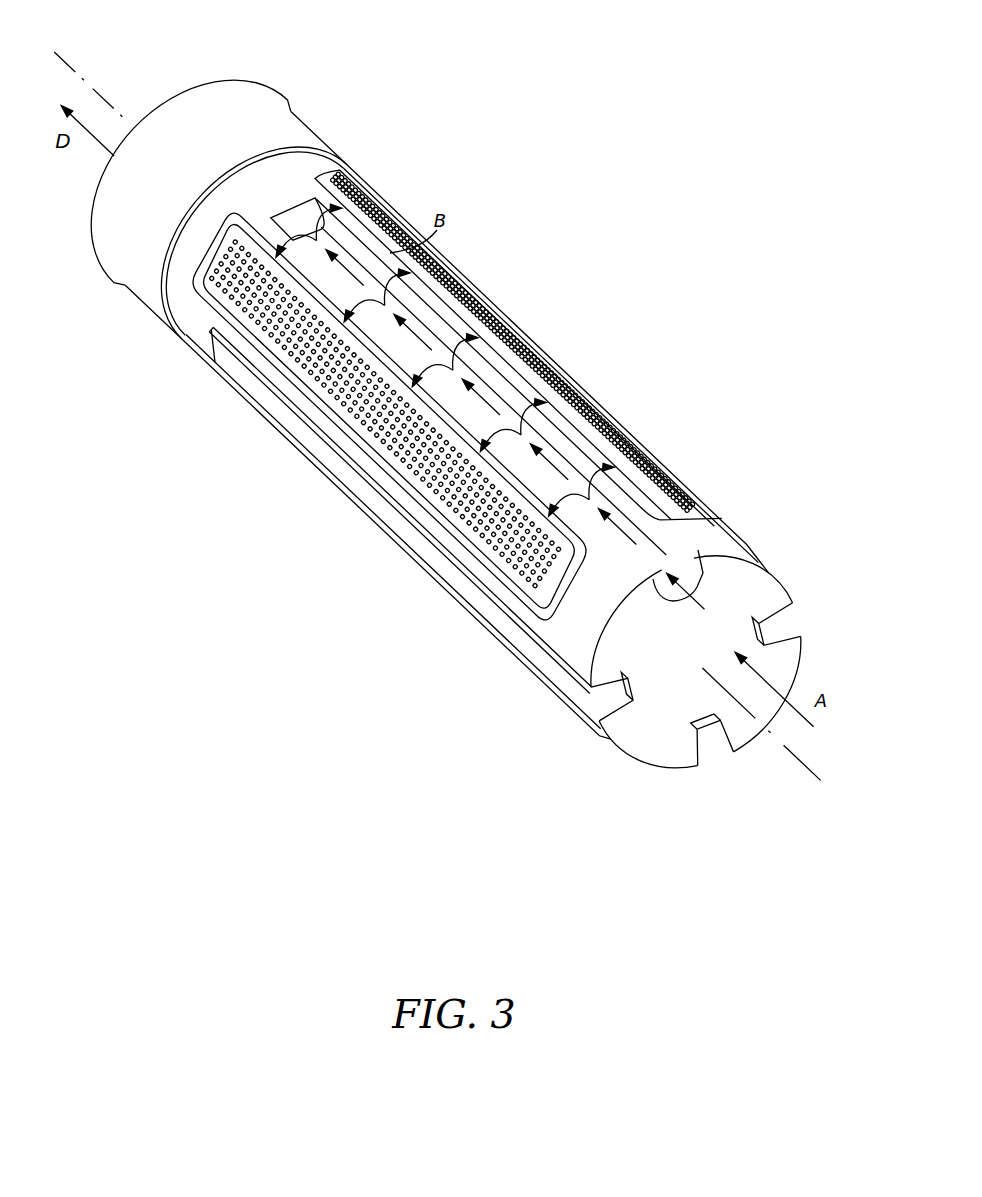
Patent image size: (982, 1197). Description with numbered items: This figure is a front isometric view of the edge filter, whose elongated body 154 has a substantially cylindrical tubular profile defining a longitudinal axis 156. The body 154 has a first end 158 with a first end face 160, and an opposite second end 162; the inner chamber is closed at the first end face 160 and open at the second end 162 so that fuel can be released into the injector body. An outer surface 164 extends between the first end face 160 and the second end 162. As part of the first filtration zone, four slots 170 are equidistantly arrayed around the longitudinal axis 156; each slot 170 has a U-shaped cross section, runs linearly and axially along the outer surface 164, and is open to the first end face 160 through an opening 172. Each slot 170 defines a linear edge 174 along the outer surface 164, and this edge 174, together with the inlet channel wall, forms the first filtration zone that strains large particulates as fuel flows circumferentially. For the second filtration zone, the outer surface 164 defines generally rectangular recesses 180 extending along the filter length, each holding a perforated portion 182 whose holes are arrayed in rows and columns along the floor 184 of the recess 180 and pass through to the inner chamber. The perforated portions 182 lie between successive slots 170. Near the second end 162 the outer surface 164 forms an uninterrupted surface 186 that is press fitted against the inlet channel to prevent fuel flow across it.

The body 154 is at (320, 137).
The longitudinal axis 156 is at (83, 83).
The first end 158 is at (758, 545).
The first end face 160 is at (775, 670).
The second end 162 is at (270, 87).
The outer surface 164 is at (200, 357).
The slot 170 is at (700, 548).
The opening 172 is at (722, 752).
The edge 174 is at (673, 516).
The recess 180 is at (525, 598).
The perforated portion 182 is at (570, 396).
The floor 184 is at (293, 365).
The uninterrupted surface 186 is at (160, 224).